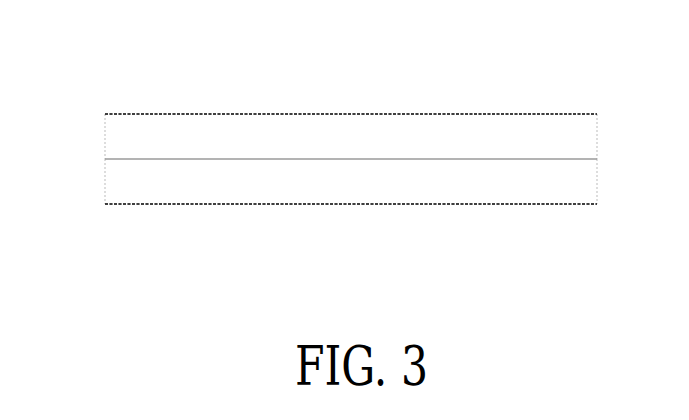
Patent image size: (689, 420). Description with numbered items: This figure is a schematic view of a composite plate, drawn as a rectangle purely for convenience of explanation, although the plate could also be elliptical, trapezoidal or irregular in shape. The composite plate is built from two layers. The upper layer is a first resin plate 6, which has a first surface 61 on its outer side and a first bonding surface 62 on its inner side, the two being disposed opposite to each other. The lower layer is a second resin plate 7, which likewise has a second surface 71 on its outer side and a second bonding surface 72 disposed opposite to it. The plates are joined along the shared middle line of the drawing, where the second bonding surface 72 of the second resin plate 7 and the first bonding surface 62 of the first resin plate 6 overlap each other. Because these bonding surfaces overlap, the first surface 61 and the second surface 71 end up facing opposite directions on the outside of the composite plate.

The first resin plate 6 is at (583, 133).
The second resin plate 7 is at (583, 183).
The first surface 61 is at (181, 114).
The first bonding surface 62 is at (118, 160).
The second surface 71 is at (253, 205).
The second bonding surface 72 is at (131, 159).